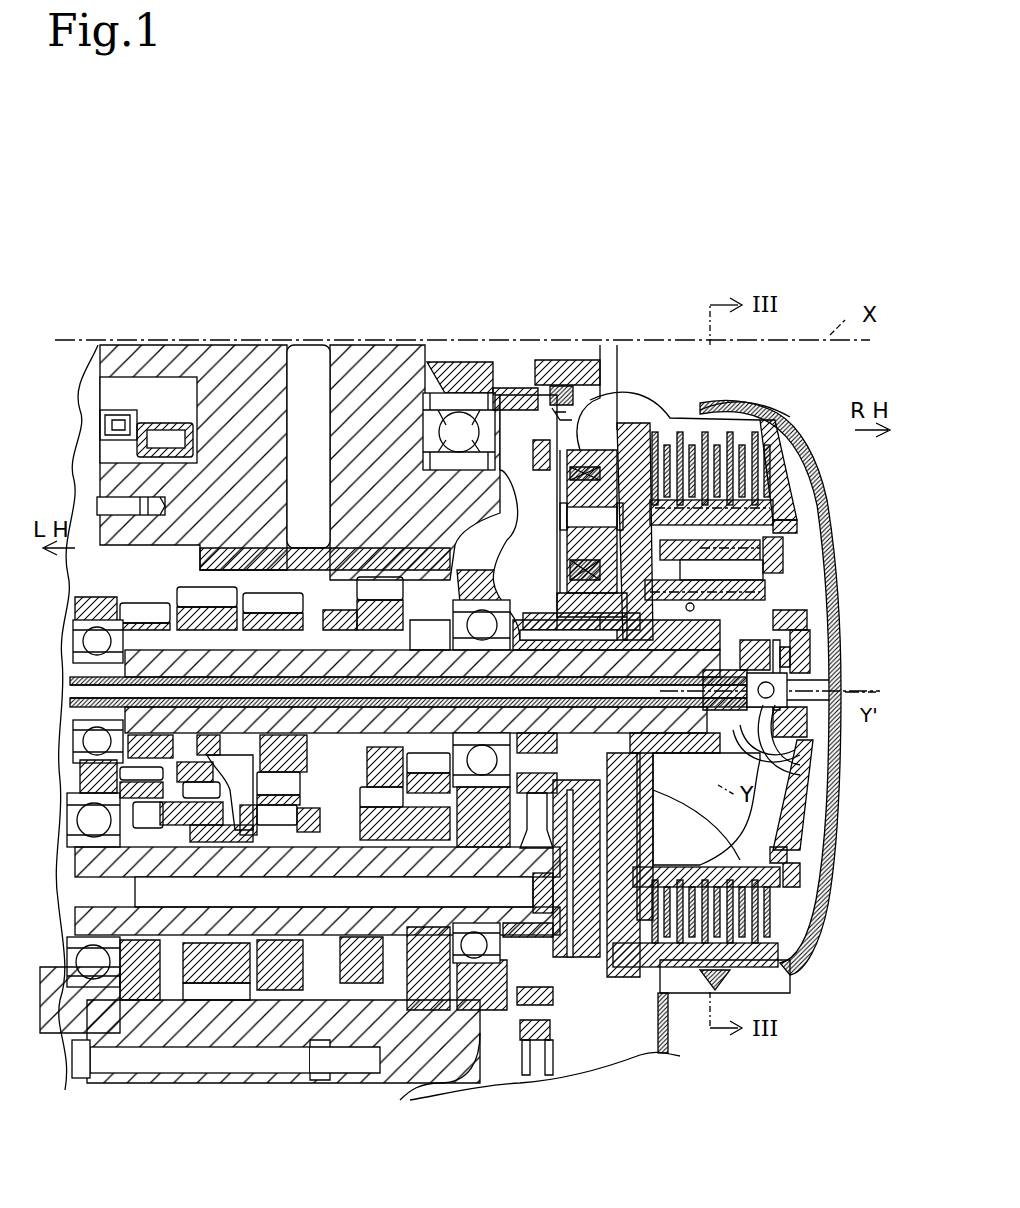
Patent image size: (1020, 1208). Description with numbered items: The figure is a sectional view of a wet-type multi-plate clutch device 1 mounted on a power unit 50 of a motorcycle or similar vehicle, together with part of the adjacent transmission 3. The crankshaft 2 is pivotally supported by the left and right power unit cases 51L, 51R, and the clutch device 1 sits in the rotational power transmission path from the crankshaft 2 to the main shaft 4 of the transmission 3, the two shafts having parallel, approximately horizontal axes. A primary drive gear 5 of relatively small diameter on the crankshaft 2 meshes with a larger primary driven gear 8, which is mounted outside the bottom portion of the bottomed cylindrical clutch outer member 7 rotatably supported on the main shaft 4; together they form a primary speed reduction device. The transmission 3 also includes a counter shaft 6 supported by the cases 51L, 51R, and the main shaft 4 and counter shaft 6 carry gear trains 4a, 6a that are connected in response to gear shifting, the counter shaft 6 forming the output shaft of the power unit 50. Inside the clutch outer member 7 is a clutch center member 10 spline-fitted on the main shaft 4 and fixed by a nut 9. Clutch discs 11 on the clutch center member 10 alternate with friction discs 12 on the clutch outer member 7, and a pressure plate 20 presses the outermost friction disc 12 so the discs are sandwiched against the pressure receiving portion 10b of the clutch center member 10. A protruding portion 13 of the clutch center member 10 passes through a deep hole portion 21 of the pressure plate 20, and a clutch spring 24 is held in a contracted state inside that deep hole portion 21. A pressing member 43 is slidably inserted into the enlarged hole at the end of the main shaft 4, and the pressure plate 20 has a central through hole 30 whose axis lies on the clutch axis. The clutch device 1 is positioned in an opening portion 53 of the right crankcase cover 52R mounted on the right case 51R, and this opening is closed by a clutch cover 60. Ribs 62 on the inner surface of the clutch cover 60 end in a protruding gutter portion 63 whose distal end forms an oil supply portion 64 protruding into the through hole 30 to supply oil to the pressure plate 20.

The power unit 50 is at (316, 266).
The left power unit case 51L is at (178, 477).
The right power unit case 51R is at (455, 490).
The crankshaft 2 is at (487, 375).
The primary driven gear 8 is at (576, 378).
The primary drive gear 5 is at (600, 398).
The clutch outer member 7 is at (630, 410).
The right crankcase cover 52R is at (725, 385).
The opening portion 53 is at (760, 392).
The friction disc 12 is at (760, 432).
The clutch disc 11 is at (778, 472).
The pressure plate 20 is at (770, 512).
The clutch device 1 is at (830, 538).
The deep hole portion 21 is at (795, 556).
The rib 62 is at (790, 590).
The clutch spring 24 is at (805, 618).
The protruding portion 13 is at (812, 632).
The protruding gutter portion 63 is at (795, 658).
The through hole 30 is at (770, 690).
The pressing member 43 is at (807, 773).
The oil supply portion 64 is at (800, 790).
The nut 9 is at (795, 812).
The clutch cover 60 is at (812, 850).
The main shaft 4 is at (700, 760).
The clutch center member 10 is at (745, 750).
The pressure receiving portion 10b is at (617, 973).
The transmission 3 is at (344, 1018).
The counter shaft 6 is at (393, 927).
The gear train 4a is at (318, 612).
The gear train 6a is at (343, 815).